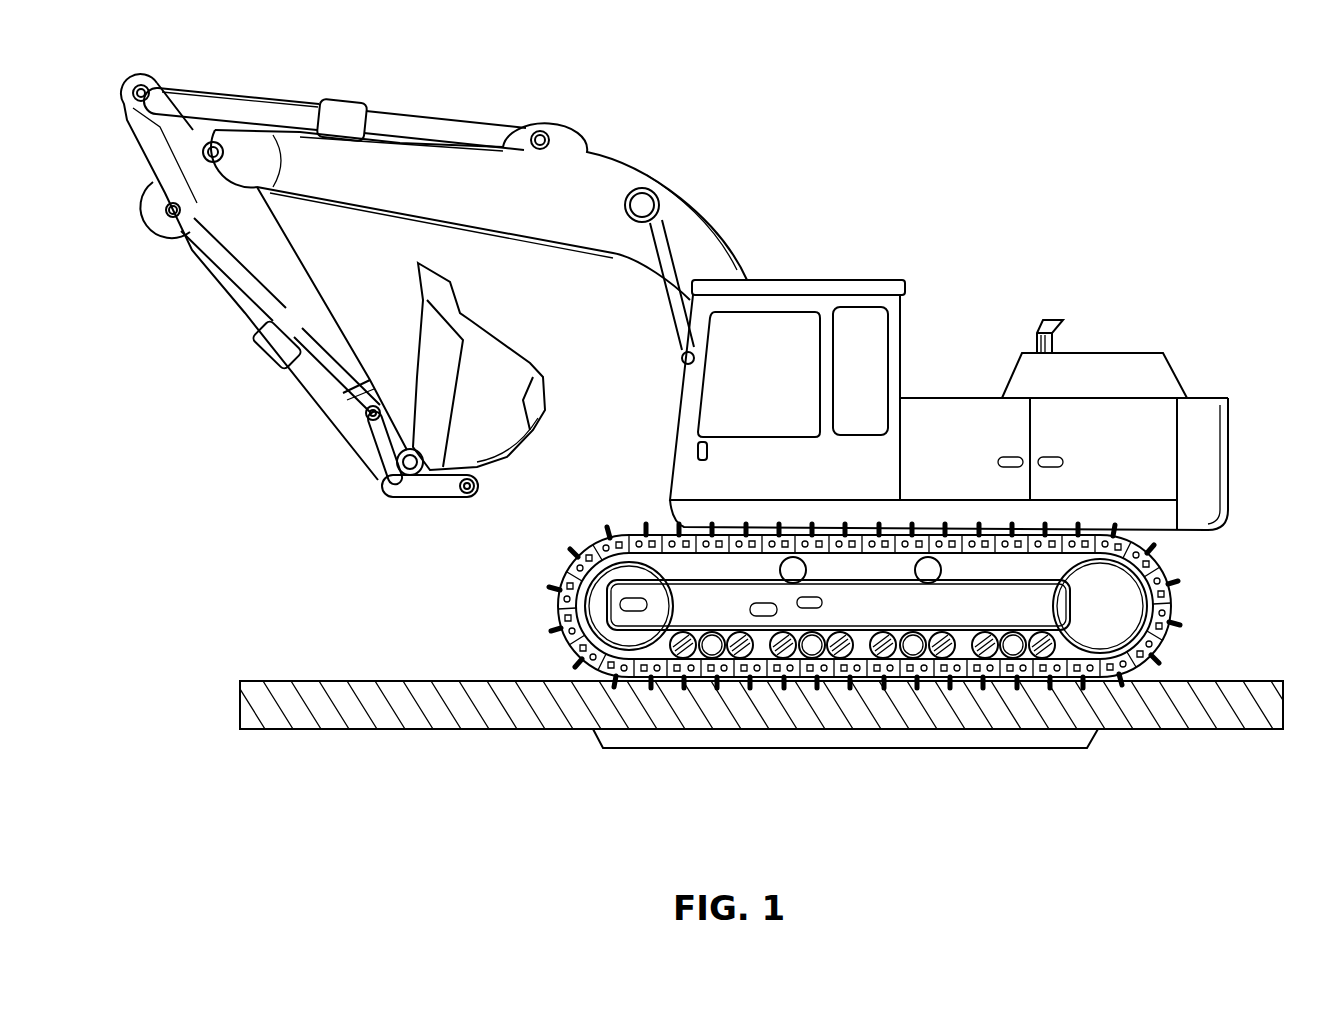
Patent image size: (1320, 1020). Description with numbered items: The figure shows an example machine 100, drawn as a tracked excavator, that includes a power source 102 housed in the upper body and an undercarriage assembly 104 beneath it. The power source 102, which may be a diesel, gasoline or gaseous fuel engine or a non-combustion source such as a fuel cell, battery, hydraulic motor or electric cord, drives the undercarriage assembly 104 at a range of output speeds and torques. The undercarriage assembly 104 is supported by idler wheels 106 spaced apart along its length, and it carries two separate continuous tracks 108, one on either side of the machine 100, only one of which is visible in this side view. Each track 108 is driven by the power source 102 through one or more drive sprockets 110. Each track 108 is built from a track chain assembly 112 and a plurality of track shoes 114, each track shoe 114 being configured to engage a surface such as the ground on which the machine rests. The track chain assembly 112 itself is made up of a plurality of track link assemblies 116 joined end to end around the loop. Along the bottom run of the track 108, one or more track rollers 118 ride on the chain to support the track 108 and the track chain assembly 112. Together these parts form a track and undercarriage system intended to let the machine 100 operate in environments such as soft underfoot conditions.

The machine 100 is at (1125, 215).
The power source 102 is at (1160, 407).
The undercarriage assembly 104 is at (852, 748).
The idler wheel 106 is at (567, 652).
The continuous track 108 is at (1185, 592).
The drive sprocket 110 is at (1157, 642).
The track chain assembly 112 is at (1052, 533).
The track shoe 114 is at (760, 527).
The track link assembly 116 is at (1050, 687).
The track roller 118 is at (1033, 635).